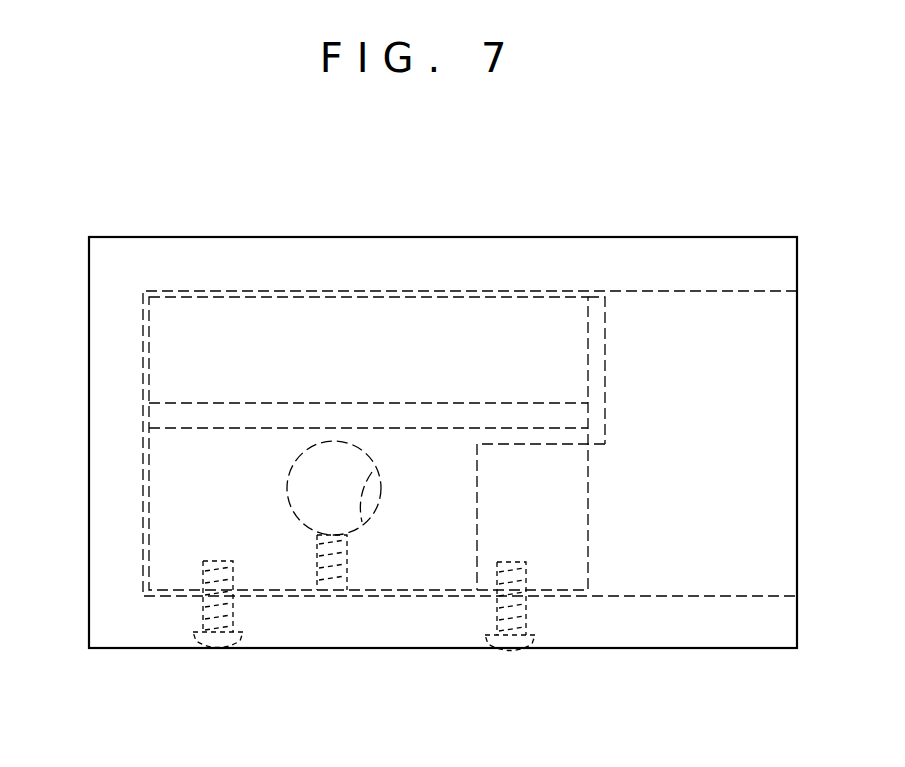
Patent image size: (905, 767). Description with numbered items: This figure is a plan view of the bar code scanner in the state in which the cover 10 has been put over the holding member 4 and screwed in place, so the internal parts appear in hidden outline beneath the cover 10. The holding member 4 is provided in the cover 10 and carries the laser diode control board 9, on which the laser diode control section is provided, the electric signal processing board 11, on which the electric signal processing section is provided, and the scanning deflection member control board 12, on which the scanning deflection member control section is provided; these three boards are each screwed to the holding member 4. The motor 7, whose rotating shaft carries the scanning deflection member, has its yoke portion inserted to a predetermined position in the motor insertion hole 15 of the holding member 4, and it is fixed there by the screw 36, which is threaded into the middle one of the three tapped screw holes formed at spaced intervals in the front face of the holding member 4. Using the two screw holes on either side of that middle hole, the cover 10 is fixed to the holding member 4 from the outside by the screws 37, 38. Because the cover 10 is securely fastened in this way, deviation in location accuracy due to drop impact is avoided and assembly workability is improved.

The cover 10 is at (463, 230).
The holding member 4 is at (324, 284).
The laser diode control board 9 is at (608, 346).
The electric signal processing board 11 is at (403, 412).
The scanning deflection member control board 12 is at (562, 570).
The motor 7 is at (310, 520).
The motor insertion hole 15 is at (358, 518).
The screw 36 is at (332, 590).
The screw 37 is at (233, 575).
The screw 38 is at (508, 640).